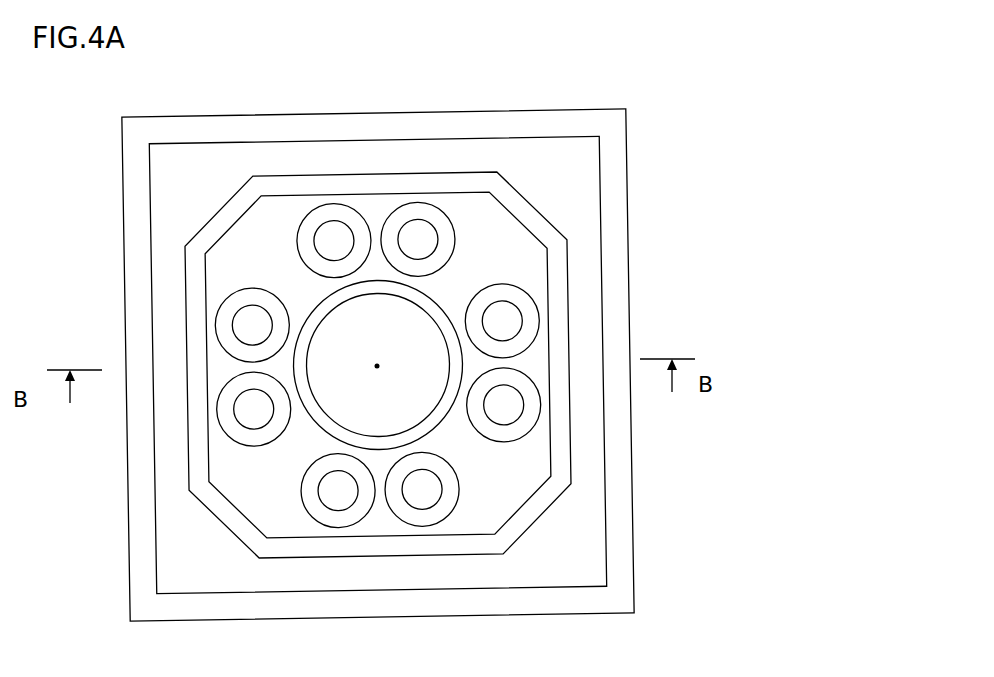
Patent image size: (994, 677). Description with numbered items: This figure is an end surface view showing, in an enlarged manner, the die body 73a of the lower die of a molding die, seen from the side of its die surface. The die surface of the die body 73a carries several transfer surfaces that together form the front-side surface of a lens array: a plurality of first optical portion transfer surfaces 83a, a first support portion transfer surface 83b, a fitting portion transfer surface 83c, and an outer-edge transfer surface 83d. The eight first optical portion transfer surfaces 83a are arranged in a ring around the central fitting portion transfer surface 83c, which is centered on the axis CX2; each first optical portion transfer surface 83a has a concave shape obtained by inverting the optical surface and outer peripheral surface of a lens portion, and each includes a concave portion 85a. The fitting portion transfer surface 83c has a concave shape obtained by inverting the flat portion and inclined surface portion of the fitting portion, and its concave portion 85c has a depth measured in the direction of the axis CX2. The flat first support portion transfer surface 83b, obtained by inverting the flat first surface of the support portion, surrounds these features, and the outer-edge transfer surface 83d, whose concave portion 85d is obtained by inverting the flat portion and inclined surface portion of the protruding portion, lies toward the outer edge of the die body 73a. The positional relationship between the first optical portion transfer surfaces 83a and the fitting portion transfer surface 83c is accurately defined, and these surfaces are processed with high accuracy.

The die body 73a is at (660, 93).
The first optical portion transfer surface 83a is at (379, 364).
The first support portion transfer surface 83b is at (502, 270).
The fitting portion transfer surface 83c is at (253, 306).
The outer-edge transfer surface 83d is at (378, 361).
The concave portion 85a is at (422, 212).
The concave portion 85c is at (345, 335).
The concave portion 85d is at (533, 168).
The axis CX2 is at (377, 366).